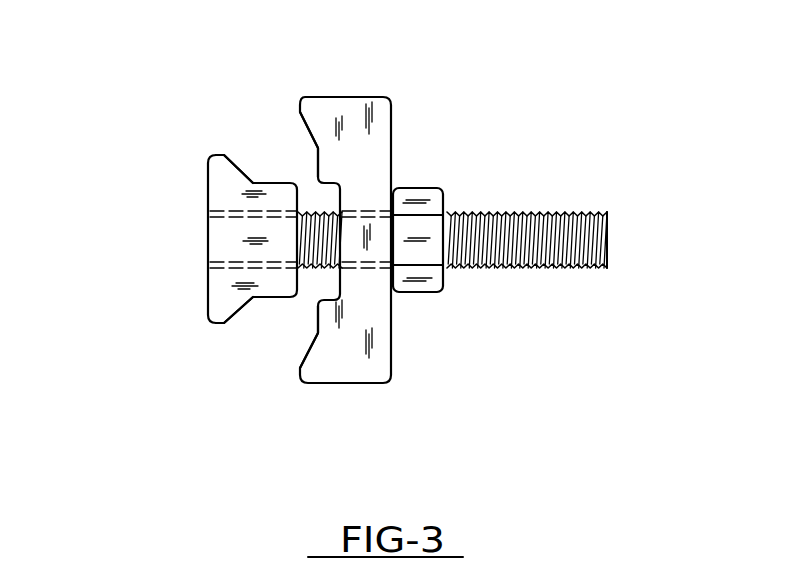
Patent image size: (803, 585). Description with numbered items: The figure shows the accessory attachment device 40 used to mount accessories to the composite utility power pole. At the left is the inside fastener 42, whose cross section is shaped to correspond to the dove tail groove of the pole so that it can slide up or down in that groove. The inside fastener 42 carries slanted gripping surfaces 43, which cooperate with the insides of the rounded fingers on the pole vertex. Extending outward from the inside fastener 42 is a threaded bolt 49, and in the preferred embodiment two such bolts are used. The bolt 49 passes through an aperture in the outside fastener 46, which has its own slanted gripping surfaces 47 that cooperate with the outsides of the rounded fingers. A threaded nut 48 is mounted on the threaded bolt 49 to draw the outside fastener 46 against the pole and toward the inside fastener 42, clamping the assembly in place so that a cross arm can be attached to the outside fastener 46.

The accessory attachment device 40 is at (427, 135).
The inside fastener 42 is at (222, 197).
The slanted gripping surfaces 43 is at (227, 167).
The outside fastener 46 is at (335, 355).
The slanted gripping surfaces 47 is at (305, 113).
The threaded nut 48 is at (417, 280).
The threaded bolt 49 is at (593, 212).